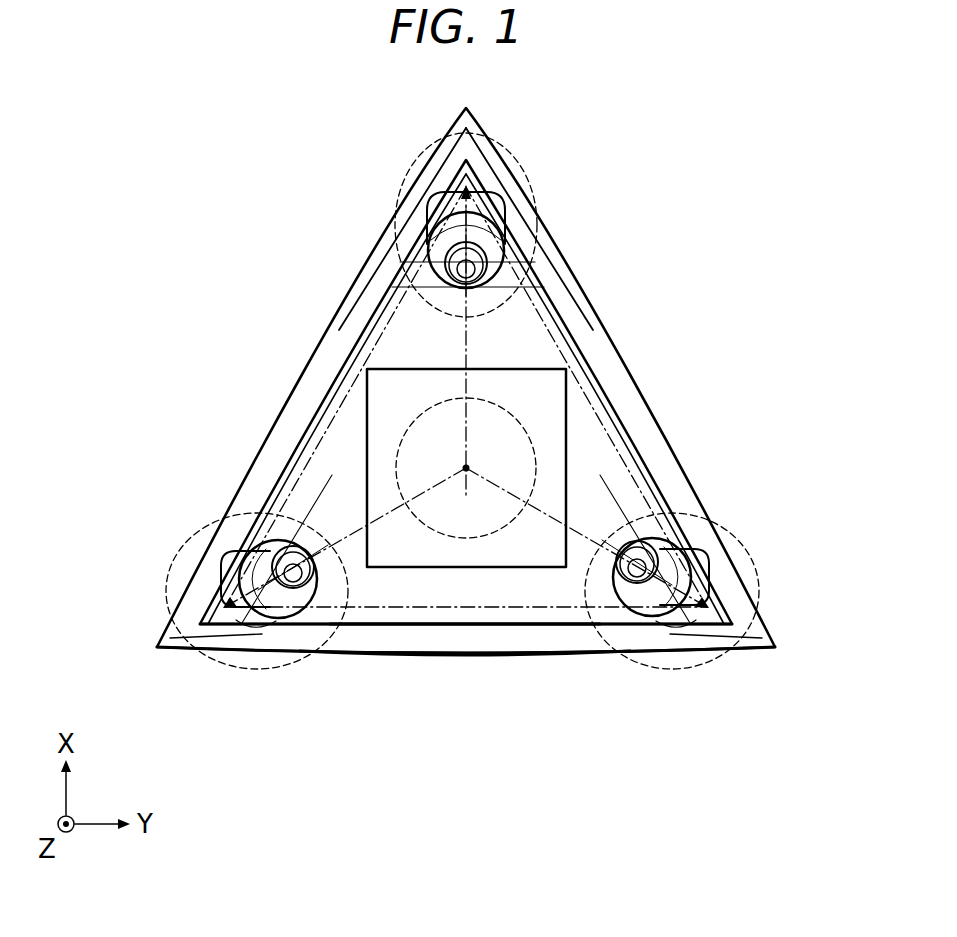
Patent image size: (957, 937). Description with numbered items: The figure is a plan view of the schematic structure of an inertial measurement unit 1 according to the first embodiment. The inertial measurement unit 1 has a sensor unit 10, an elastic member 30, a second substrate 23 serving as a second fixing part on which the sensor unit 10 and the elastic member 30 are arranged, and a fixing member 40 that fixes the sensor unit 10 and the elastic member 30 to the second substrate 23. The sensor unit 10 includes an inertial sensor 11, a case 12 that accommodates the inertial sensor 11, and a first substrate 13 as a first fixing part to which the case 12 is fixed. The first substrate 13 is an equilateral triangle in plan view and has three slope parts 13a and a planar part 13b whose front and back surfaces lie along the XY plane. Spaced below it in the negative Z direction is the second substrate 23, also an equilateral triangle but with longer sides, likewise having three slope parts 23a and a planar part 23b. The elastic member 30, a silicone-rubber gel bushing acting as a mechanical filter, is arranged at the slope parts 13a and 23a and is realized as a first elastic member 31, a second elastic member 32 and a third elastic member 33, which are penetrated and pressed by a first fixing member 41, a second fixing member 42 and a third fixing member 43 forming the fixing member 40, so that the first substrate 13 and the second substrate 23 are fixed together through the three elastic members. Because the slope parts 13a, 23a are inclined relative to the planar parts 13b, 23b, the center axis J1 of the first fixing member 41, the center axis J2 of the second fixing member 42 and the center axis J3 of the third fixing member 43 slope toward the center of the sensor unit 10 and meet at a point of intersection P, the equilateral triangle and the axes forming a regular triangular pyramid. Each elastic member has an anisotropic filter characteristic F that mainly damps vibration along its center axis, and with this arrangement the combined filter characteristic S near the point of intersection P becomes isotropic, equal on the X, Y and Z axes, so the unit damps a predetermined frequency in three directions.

The inertial measurement unit 1 is at (718, 221).
The sensor unit 10 is at (495, 438).
The inertial sensor 11 is at (540, 437).
The case 12 is at (540, 393).
The first substrate 13 is at (468, 438).
The slope parts 13a is at (553, 282).
The planar part 13b is at (507, 620).
The second substrate 23 is at (520, 440).
The slope parts 23a is at (445, 178).
The planar part 23b is at (465, 680).
The elastic member 30 is at (343, 240).
The first elastic member 31 is at (426, 238).
The second elastic member 32 is at (240, 575).
The third elastic member 33 is at (690, 573).
The fixing member 40 is at (327, 251).
The first fixing member 41 is at (412, 266).
The second fixing member 42 is at (240, 551).
The third fixing member 43 is at (695, 550).
The anisotropic filter characteristic F is at (528, 158).
The combined filter characteristic S is at (429, 405).
The point of intersection P is at (472, 468).
The center axis J1 is at (470, 340).
The center axis J2 is at (352, 530).
The center axis J3 is at (589, 534).